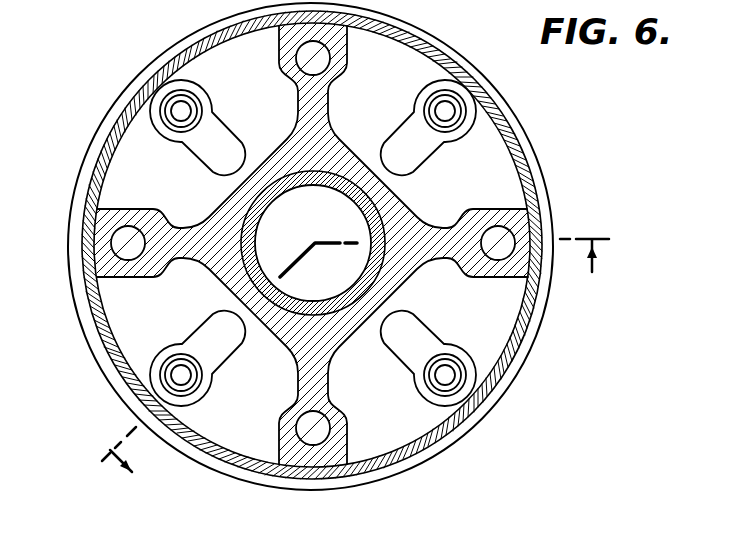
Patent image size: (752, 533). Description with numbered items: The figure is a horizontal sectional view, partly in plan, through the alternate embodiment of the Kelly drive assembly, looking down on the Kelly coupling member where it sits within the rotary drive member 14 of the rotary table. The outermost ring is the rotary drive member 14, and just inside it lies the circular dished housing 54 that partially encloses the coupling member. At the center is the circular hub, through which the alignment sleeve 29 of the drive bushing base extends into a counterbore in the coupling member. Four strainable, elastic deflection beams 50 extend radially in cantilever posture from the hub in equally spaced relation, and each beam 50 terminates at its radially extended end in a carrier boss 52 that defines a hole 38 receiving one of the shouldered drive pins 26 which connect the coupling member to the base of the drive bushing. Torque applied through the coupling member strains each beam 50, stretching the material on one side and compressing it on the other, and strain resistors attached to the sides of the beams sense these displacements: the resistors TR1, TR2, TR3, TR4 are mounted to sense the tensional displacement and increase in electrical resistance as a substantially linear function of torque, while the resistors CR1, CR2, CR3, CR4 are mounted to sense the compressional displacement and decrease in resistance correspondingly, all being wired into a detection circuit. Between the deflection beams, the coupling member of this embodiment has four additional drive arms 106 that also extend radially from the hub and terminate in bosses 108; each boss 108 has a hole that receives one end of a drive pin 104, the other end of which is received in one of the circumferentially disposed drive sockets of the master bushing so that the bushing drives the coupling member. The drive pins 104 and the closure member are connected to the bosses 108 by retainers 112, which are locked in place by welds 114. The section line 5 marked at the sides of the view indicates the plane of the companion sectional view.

The section line 5- 5 is at (346, 368).
The rotary drive member 14 is at (535, 143).
The shouldered drive pins 26 is at (295, 47).
The alignment sleeve 29 is at (340, 198).
The holes 38 is at (301, 70).
The deflection beams 50 is at (312, 122).
The carrier boss 52 is at (345, 43).
The circular dished housing 54 is at (502, 120).
The drive pins 104 is at (172, 106).
The drive arms 106 is at (222, 158).
The bosses 108 is at (160, 133).
The retainers 112 is at (160, 109).
The welds 114 is at (182, 107).
The tension strain resistor TR1 is at (327, 110).
The tension strain resistor TR2 is at (440, 262).
The tension strain resistor TR3 is at (300, 373).
The tension strain resistor TR4 is at (196, 214).
The compression strain resistor CR1 is at (298, 108).
The compression strain resistor CR2 is at (443, 222).
The compression strain resistor CR3 is at (330, 373).
The compression strain resistor CR4 is at (188, 260).